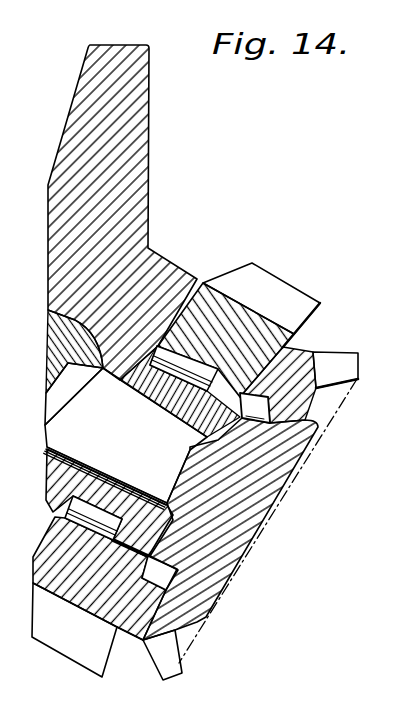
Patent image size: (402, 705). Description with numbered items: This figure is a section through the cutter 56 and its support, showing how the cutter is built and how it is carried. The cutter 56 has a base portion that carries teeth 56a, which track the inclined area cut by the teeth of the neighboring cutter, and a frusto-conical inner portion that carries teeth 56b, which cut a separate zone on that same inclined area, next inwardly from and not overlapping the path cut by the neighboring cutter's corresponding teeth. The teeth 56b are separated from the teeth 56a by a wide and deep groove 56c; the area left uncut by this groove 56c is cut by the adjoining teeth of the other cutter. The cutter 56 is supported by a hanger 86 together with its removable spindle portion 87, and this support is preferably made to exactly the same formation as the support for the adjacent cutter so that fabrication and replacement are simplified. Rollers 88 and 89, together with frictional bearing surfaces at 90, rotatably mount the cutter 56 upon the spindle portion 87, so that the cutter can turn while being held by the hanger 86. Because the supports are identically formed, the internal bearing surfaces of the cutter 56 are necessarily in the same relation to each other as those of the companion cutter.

The cutter 56 is at (194, 478).
The teeth 56a is at (60, 645).
The teeth 56b is at (170, 675).
The groove 56c is at (127, 665).
The hanger 86 is at (134, 238).
The removable spindle portion 87 is at (90, 432).
The roller 88 is at (153, 400).
The roller 89 is at (260, 400).
The frictional bearing surfaces 90 is at (308, 440).